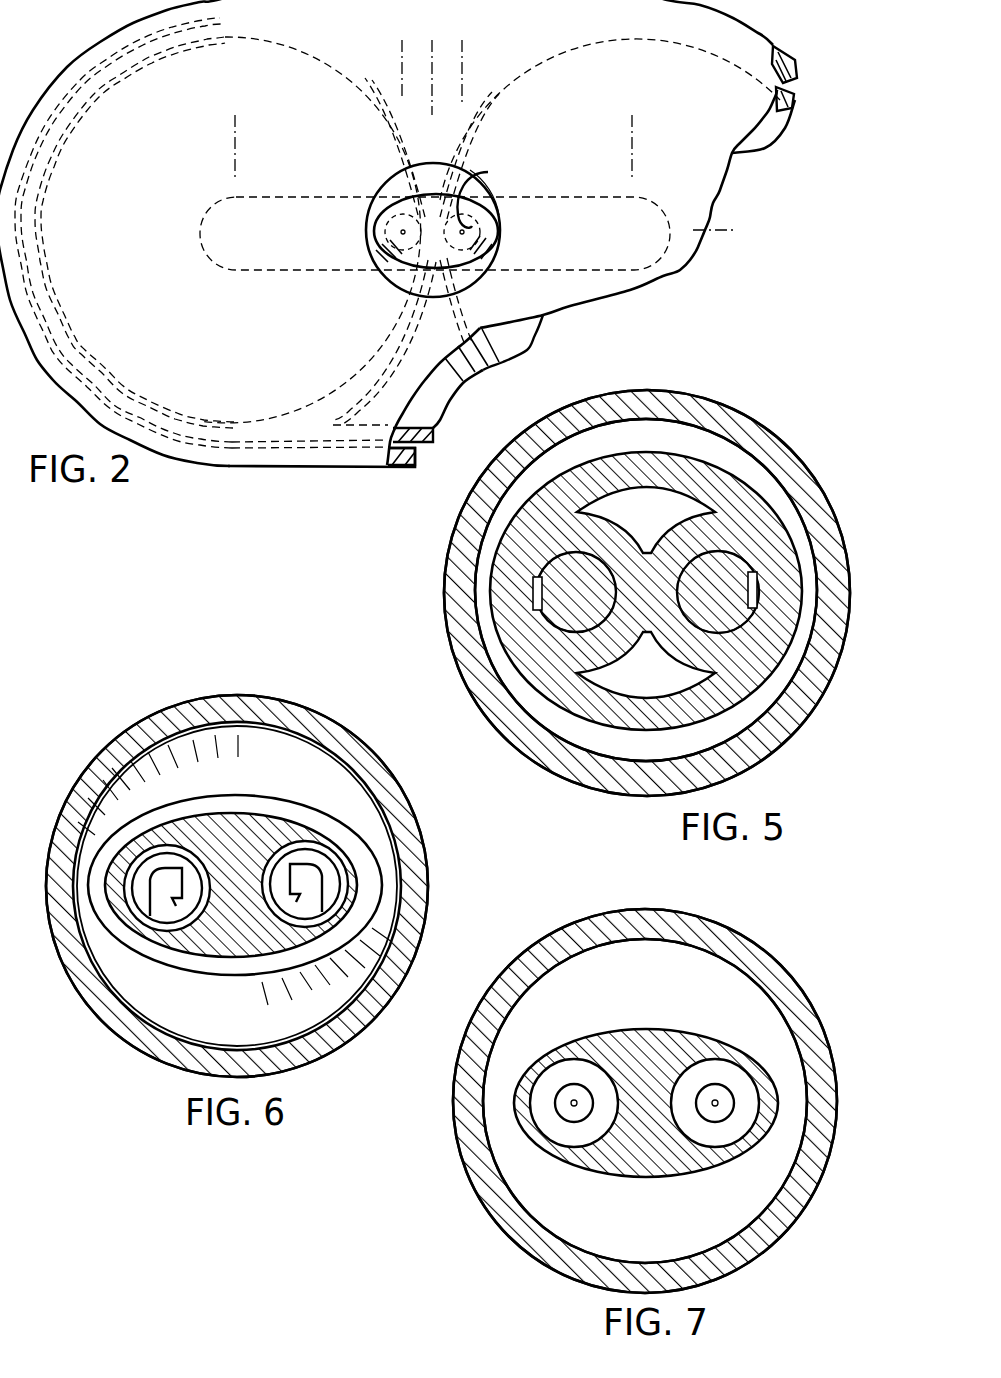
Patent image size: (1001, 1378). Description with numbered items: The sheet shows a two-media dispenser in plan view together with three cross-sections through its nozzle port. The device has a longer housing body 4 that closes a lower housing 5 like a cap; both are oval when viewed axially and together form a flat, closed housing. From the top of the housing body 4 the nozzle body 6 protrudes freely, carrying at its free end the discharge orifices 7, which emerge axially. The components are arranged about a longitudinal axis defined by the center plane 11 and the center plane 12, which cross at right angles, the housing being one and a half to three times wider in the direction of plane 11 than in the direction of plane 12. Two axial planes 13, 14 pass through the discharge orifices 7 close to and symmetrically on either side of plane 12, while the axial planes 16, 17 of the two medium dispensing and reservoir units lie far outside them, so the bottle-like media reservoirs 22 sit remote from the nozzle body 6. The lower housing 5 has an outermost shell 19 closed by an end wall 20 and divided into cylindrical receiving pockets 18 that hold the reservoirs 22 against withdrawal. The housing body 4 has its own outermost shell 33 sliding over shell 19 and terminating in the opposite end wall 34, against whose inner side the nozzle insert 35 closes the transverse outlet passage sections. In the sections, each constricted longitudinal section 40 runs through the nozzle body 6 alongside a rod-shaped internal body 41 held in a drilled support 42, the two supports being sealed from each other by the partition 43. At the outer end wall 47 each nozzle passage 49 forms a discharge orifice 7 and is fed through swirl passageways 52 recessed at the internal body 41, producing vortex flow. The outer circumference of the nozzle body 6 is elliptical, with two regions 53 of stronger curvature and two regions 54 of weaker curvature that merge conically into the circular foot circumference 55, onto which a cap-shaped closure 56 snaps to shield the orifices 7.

In FIG. 2, the housing body 4 is at (181, 473).
In FIG. 2, the lower housing 5 is at (426, 450).
In FIG. 2, the nozzle body 6 is at (387, 258).
In FIG. 5, the nozzle body 6 is at (811, 595).
In FIG. 6, the nozzle body 6 is at (252, 748).
In FIG. 7, the nozzle body 6 is at (684, 1190).
In FIG. 2, the discharge orifice 7 is at (487, 172).
In FIG. 2, the center plane 11 is at (724, 228).
In FIG. 2, the center plane 12 is at (432, 55).
In FIG. 2, the axial plane 13 is at (463, 62).
In FIG. 2, the axial plane 14 is at (402, 42).
In FIG. 2, the axial plane 16 is at (633, 148).
In FIG. 2, the axial plane 17 is at (234, 131).
In FIG. 2, the receiving pocket 18 is at (763, 131).
In FIG. 2, the outermost shell 19 is at (793, 103).
In FIG. 2, the end wall 20 is at (431, 410).
In FIG. 2, the media reservoir 22 is at (519, 340).
In FIG. 2, the outermost shell 33 is at (800, 52).
In FIG. 2, the end wall 34 is at (443, 356).
In FIG. 2, the nozzle insert 35 is at (336, 196).
In FIG. 2, the longitudinal section 40 is at (400, 236).
In FIG. 5, the longitudinal section 40 is at (752, 600).
In FIG. 6, the longitudinal section 40 is at (135, 870).
In FIG. 5, the internal body 41 is at (731, 559).
In FIG. 5, the support 42 is at (690, 560).
In FIG. 7, the support 42 is at (552, 1074).
In FIG. 5, the partition 43 is at (645, 632).
In FIG. 7, the partition 43 is at (642, 1102).
In FIG. 7, the end wall 47 is at (712, 1053).
In FIG. 7, the nozzle passage 49 is at (576, 1100).
In FIG. 6, the swirl passageway 52 is at (165, 893).
In FIG. 2, the region of more pronounced curvature 53 is at (494, 210).
In FIG. 5, the region of more pronounced curvature 53 is at (512, 678).
In FIG. 6, the region of more pronounced curvature 53 is at (80, 886).
In FIG. 7, the region of more pronounced curvature 53 is at (513, 1112).
In FIG. 2, the region of less curvature 54 is at (453, 276).
In FIG. 5, the region of less curvature 54 is at (651, 738).
In FIG. 6, the region of less curvature 54 is at (300, 765).
In FIG. 7, the region of less curvature 54 is at (634, 1180).
In FIG. 2, the foot circumference 55 is at (494, 188).
In FIG. 6, the foot circumference 55 is at (80, 946).
In FIG. 5, the closure 56 is at (573, 763).
In FIG. 6, the closure 56 is at (102, 995).
In FIG. 7, the closure 56 is at (456, 1103).